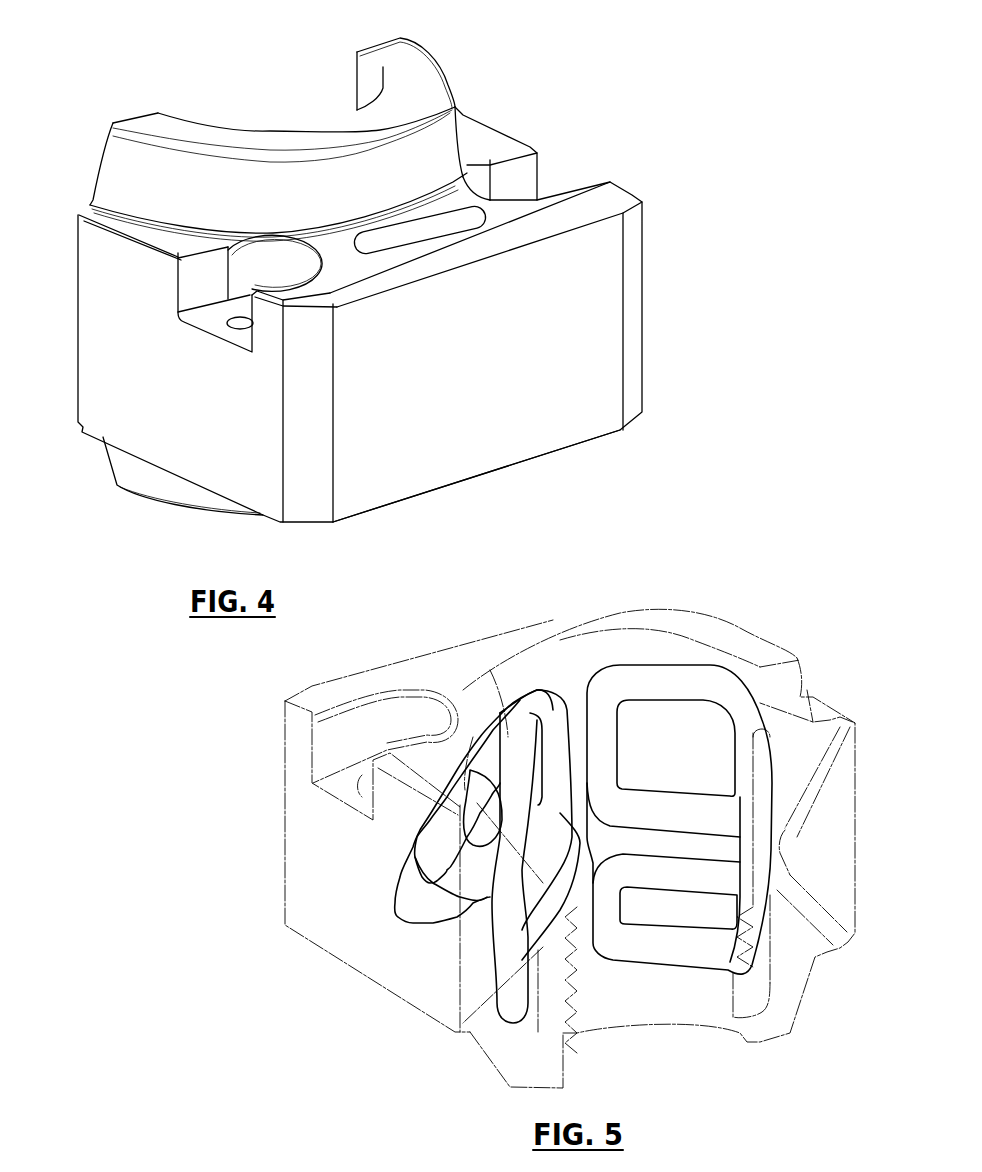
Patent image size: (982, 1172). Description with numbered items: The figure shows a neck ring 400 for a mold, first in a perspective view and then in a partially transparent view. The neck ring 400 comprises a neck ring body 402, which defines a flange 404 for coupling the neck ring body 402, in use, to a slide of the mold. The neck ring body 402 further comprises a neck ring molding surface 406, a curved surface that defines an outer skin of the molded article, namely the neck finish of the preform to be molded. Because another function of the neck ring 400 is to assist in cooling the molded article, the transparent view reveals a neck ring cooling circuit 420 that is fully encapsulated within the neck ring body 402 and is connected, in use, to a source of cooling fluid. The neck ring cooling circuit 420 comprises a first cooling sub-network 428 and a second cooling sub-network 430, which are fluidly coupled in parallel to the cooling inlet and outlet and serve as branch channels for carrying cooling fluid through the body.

In FIG. 4, the neck ring 400 is at (590, 97).
In FIG. 5, the neck ring 400 is at (802, 624).
In FIG. 4, the neck ring body 402 is at (108, 425).
In FIG. 4, the flange 404 is at (417, 458).
In FIG. 4, the neck ring molding surface 406 is at (357, 88).
In FIG. 5, the neck ring cooling circuit 420 is at (492, 943).
In FIG. 5, the first cooling sub-network 428 is at (470, 727).
In FIG. 5, the second cooling sub-network 430 is at (650, 665).